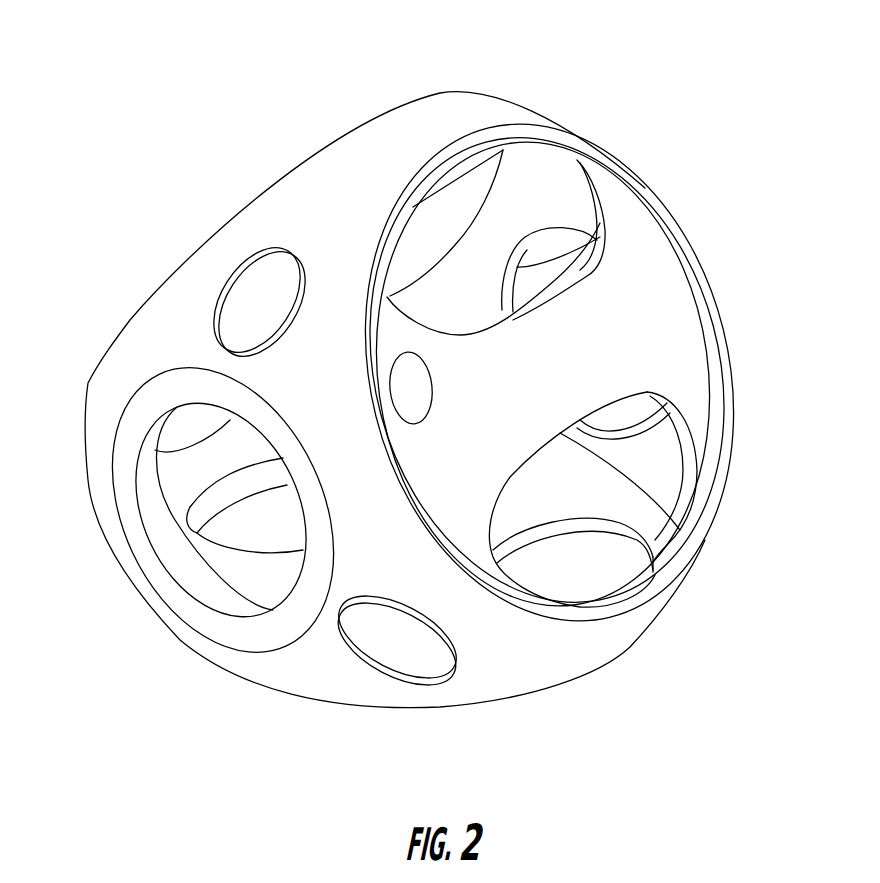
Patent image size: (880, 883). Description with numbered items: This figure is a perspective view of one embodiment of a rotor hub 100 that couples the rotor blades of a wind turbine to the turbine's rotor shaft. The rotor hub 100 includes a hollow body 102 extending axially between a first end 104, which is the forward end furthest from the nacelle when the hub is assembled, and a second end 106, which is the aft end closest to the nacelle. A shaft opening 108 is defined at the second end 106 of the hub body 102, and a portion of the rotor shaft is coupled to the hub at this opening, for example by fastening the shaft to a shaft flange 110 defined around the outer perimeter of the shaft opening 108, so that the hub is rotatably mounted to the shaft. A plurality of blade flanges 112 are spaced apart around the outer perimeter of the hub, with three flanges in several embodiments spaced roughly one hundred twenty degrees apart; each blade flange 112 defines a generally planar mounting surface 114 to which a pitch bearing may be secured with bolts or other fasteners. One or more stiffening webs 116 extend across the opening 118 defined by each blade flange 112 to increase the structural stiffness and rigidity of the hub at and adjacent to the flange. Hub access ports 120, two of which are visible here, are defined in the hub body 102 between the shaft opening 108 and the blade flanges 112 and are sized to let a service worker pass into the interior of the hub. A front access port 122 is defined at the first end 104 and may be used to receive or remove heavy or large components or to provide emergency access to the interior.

The rotor hub 100 is at (419, 388).
The hollow body 102 is at (395, 361).
The first end 104 is at (549, 373).
The second end 106 is at (221, 547).
The shaft opening 108 is at (198, 510).
The shaft flange 110 is at (229, 562).
The blade flange 112 is at (516, 366).
The mounting surface 114 is at (509, 373).
The stiffening web 116 is at (599, 440).
The opening 118 is at (628, 503).
The hub access port 120 is at (284, 496).
The front access port 122 is at (507, 209).